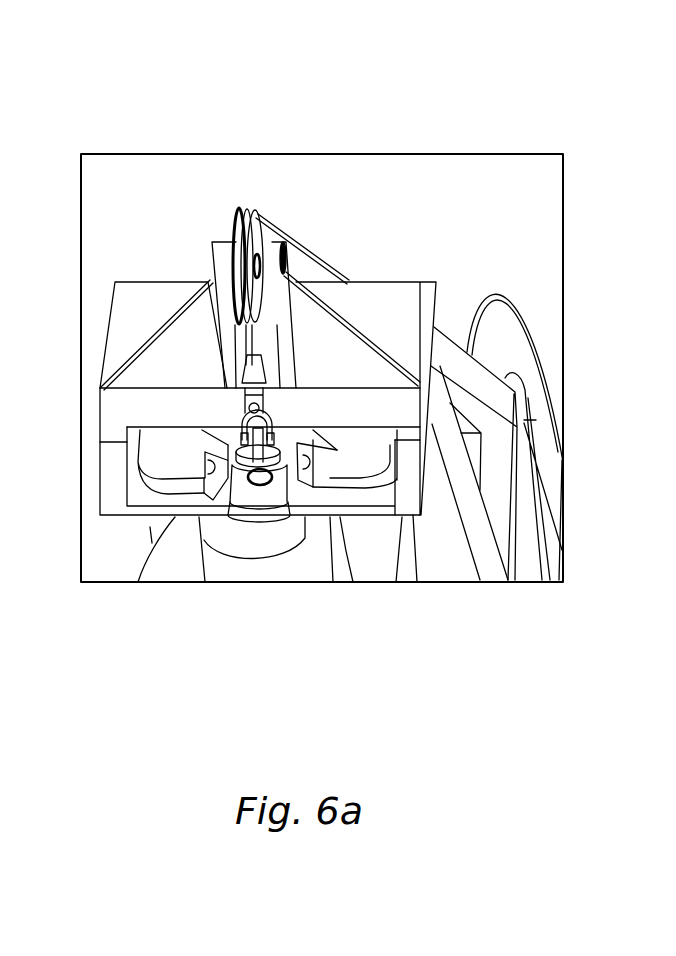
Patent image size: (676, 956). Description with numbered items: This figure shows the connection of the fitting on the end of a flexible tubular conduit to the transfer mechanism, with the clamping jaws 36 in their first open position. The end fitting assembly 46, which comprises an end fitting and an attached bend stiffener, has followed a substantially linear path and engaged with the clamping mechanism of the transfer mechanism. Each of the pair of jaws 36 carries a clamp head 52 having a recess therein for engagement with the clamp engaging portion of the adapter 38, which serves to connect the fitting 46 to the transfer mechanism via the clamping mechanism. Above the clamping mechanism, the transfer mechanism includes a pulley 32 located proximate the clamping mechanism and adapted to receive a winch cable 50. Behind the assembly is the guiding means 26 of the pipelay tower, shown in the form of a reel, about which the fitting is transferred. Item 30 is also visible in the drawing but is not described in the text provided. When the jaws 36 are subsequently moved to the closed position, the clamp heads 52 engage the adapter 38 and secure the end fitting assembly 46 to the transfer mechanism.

The guiding means 26 is at (520, 316).
The support frame 30 is at (453, 558).
The pulley 32 is at (259, 226).
The jaws 36 is at (155, 487).
The adapter 38 is at (255, 495).
The fitting 46 is at (357, 570).
The winch cable 50 is at (320, 255).
The clamp head 52 is at (197, 496).